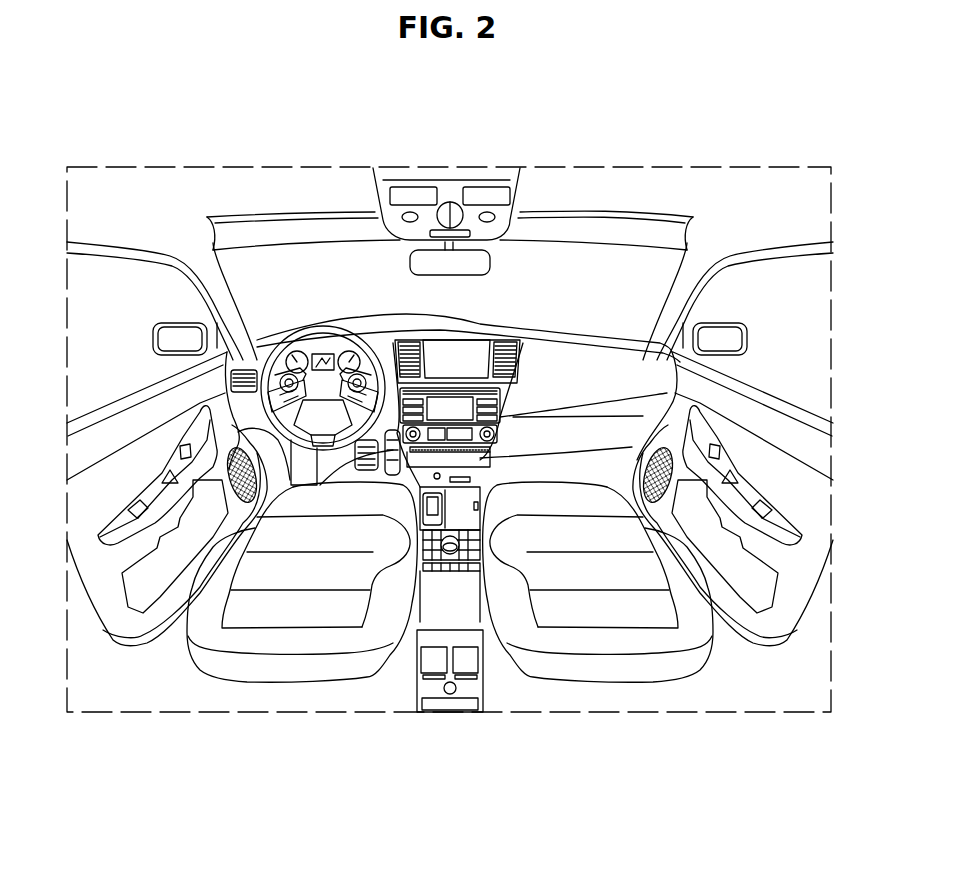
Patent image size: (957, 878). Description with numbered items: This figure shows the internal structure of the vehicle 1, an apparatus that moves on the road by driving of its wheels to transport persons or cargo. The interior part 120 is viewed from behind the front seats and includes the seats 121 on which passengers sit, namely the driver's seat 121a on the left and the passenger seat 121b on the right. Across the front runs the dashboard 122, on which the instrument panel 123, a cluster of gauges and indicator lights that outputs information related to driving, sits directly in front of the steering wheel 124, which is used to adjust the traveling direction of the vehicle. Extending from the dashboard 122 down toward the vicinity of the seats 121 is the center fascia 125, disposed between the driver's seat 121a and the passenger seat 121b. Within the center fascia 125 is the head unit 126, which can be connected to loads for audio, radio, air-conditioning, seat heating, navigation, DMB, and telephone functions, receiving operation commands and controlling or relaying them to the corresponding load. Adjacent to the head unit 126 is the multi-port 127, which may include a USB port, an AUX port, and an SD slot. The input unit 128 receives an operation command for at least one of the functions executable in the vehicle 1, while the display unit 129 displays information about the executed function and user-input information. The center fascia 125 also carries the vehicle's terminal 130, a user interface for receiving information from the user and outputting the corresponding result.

The vehicle 1 is at (240, 118).
The interior part 120 is at (607, 196).
The seats 121 is at (623, 770).
The driver's seat 121a is at (288, 672).
The passenger seat 121b is at (618, 672).
The dashboard 122 is at (608, 353).
The instrument panel 123 is at (307, 337).
The steering wheel 124 is at (333, 323).
The center fascia 125 is at (457, 456).
The head unit 126 is at (503, 415).
The multi-port 127 is at (477, 474).
The input unit 128 is at (482, 528).
The display unit 129 is at (452, 408).
The vehicle's terminal 130 is at (477, 330).